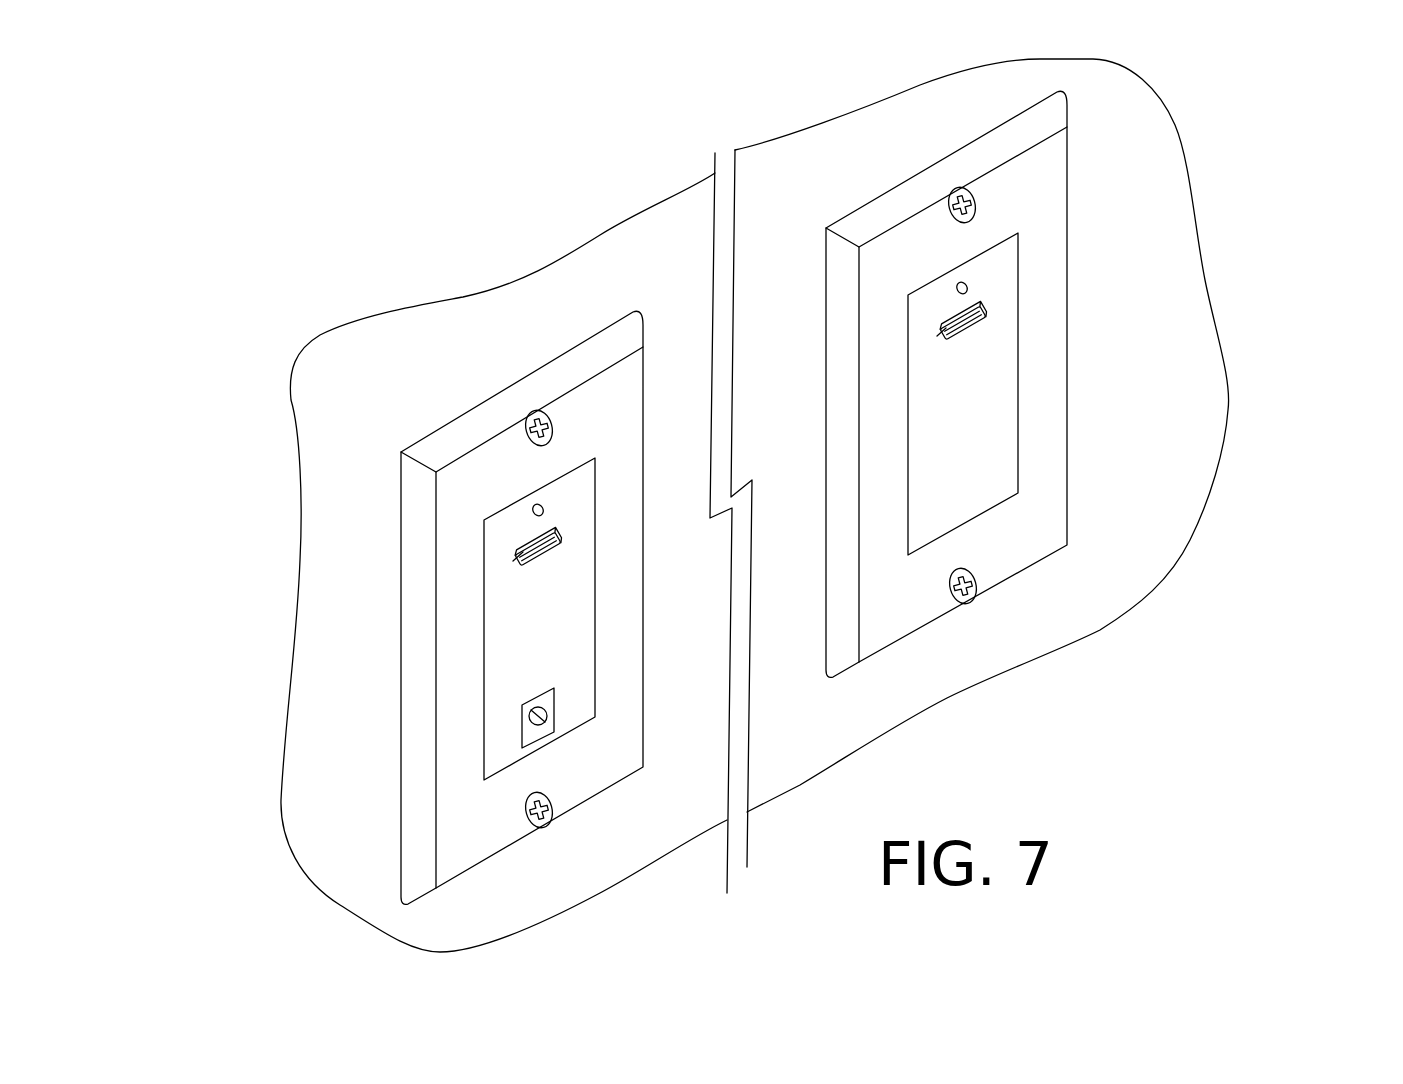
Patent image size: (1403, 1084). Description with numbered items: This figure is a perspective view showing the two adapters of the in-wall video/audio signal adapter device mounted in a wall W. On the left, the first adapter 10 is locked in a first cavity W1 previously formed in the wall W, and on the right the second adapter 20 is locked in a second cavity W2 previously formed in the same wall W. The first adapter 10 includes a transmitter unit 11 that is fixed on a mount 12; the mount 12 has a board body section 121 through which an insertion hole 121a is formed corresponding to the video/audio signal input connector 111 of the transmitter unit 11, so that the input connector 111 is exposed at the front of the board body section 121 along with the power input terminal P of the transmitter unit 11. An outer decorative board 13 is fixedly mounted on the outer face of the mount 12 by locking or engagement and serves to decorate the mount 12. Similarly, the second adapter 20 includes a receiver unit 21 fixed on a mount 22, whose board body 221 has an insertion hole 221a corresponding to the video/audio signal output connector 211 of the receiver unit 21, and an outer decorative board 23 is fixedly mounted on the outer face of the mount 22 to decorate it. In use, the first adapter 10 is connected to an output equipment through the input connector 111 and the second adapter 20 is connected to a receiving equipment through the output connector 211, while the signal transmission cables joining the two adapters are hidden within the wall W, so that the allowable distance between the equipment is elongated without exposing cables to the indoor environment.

The first adapter 10 is at (526, 573).
The transmitter unit 11 is at (526, 535).
The video/audio signal input connector 111 is at (524, 540).
The mount 12 is at (460, 619).
The board body section 121 is at (510, 623).
The insertion hole 121a is at (563, 537).
The outer decorative board 13 is at (598, 420).
The power input terminal P is at (523, 743).
The second adapter 20 is at (990, 424).
The receiver unit 21 is at (954, 350).
The video/audio signal output connector 211 is at (988, 320).
The mount 22 is at (1042, 394).
The board body 221 is at (967, 415).
The insertion hole 221a is at (937, 343).
The outer decorative board 23 is at (1040, 183).
The wall W is at (751, 505).
The first cavity W1 is at (473, 405).
The second cavity W2 is at (882, 193).